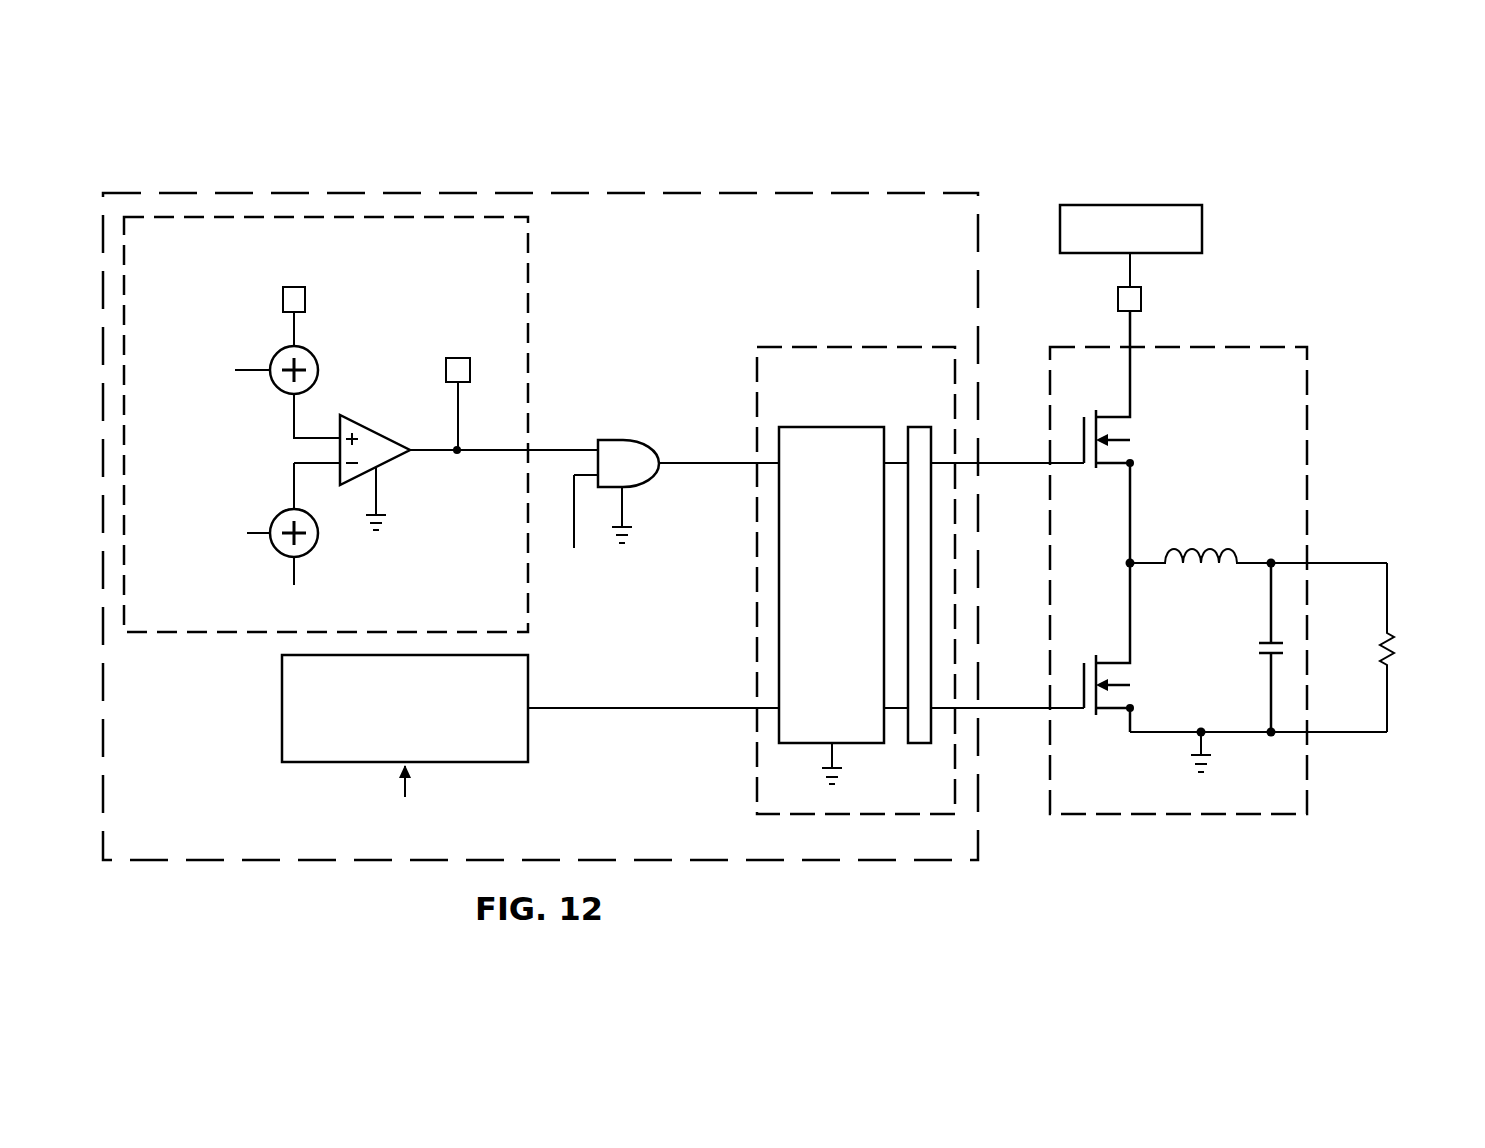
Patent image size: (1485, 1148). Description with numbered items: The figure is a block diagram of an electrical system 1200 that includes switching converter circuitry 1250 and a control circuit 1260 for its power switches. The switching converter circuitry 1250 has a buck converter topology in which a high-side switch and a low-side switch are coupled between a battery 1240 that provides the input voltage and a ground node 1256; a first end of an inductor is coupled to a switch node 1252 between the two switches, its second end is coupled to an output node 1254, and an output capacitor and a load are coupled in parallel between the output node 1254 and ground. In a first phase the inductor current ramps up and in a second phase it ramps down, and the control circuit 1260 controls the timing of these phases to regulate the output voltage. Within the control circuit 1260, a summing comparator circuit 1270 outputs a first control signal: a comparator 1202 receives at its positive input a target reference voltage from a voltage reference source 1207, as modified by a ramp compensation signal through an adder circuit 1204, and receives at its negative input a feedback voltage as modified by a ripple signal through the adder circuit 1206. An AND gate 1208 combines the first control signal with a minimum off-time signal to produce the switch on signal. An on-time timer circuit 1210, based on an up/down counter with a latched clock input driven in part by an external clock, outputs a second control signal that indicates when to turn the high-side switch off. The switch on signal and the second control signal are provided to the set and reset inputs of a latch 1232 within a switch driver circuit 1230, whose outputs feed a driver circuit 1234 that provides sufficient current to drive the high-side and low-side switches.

The electrical system 1200 is at (1041, 139).
The control circuit 1260 is at (398, 190).
The summing comparator circuit 1270 is at (533, 284).
The voltage reference source 1207 is at (282, 300).
The adder circuit 1204 is at (283, 393).
The adder circuit 1206 is at (281, 512).
The comparator 1202 is at (374, 431).
The AND gate 1208 is at (634, 440).
The on-time timer circuit 1210 is at (282, 723).
The switch driver circuit 1230 is at (873, 343).
The latch 1232 is at (845, 427).
The driver circuit 1234 is at (920, 745).
The battery 1240 is at (1204, 230).
The switching converter circuitry 1250 is at (1249, 343).
The switch node 1252 is at (1127, 560).
The output node 1254 is at (1266, 569).
The ground node 1256 is at (1193, 762).